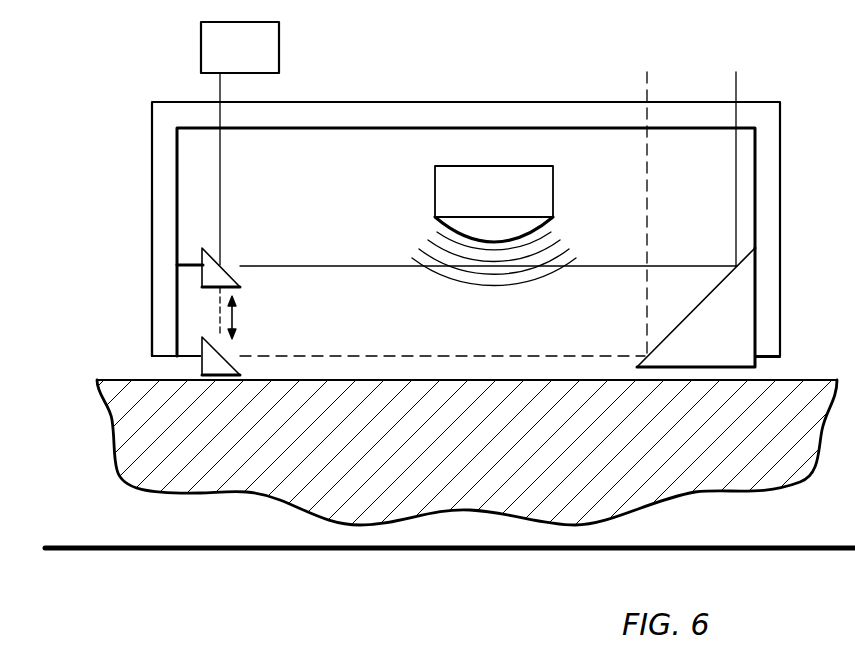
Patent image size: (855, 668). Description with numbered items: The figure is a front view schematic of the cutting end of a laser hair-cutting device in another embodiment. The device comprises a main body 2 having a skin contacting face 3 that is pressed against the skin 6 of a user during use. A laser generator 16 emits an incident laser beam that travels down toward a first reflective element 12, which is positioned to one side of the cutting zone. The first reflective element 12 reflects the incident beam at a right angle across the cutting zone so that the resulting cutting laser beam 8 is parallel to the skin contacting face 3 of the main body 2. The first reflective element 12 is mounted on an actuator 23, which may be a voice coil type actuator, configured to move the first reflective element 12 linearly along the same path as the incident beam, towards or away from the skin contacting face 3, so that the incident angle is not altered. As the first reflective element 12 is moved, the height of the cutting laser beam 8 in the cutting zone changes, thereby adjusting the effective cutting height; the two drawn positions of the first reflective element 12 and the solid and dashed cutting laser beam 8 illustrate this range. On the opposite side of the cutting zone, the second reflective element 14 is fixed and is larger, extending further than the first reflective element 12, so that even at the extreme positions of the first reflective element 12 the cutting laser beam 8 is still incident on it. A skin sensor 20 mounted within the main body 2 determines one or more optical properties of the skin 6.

The main body 2 is at (770, 152).
The skin contacting face 3 is at (772, 359).
The skin 6 is at (672, 490).
The cutting laser beam 8 is at (337, 266).
The first reflective element 12 is at (205, 256).
The second reflective element 14 is at (722, 293).
The laser generator 16 is at (275, 35).
The skin sensor 20 is at (545, 178).
The actuator 23 is at (183, 312).